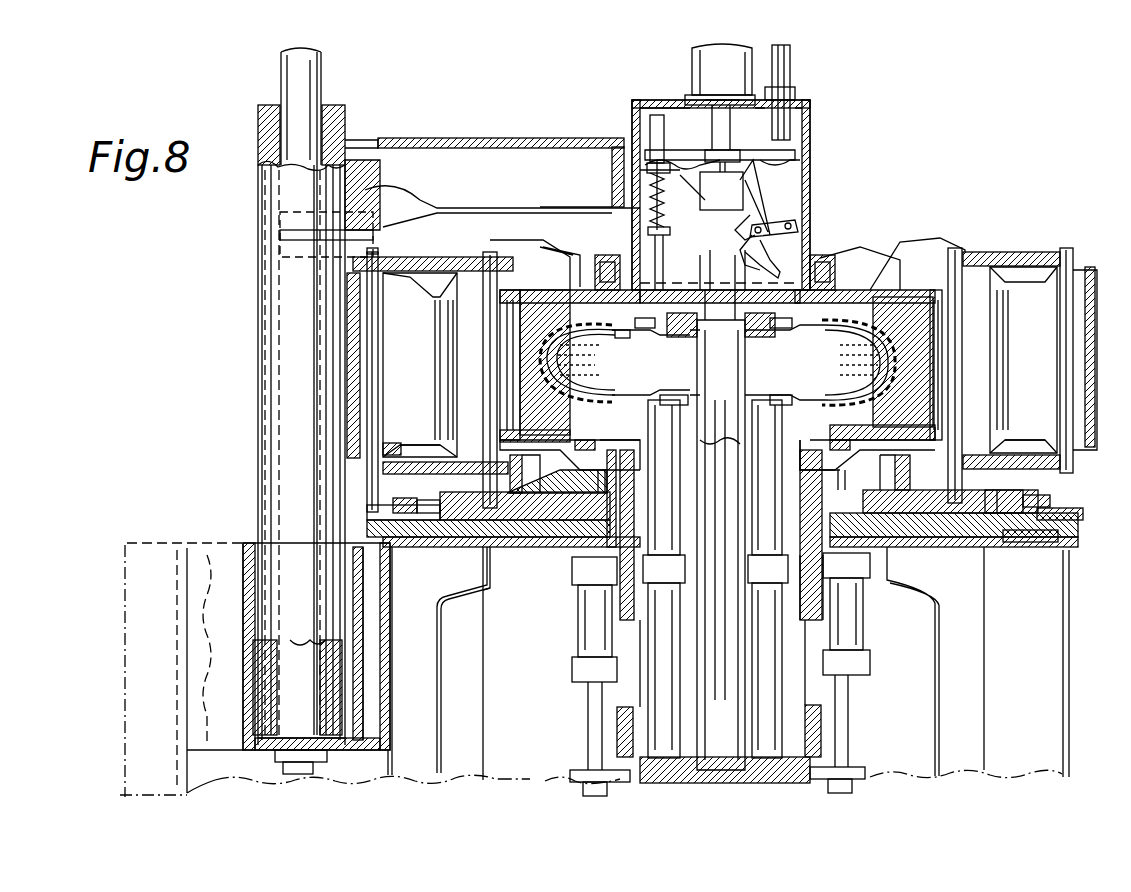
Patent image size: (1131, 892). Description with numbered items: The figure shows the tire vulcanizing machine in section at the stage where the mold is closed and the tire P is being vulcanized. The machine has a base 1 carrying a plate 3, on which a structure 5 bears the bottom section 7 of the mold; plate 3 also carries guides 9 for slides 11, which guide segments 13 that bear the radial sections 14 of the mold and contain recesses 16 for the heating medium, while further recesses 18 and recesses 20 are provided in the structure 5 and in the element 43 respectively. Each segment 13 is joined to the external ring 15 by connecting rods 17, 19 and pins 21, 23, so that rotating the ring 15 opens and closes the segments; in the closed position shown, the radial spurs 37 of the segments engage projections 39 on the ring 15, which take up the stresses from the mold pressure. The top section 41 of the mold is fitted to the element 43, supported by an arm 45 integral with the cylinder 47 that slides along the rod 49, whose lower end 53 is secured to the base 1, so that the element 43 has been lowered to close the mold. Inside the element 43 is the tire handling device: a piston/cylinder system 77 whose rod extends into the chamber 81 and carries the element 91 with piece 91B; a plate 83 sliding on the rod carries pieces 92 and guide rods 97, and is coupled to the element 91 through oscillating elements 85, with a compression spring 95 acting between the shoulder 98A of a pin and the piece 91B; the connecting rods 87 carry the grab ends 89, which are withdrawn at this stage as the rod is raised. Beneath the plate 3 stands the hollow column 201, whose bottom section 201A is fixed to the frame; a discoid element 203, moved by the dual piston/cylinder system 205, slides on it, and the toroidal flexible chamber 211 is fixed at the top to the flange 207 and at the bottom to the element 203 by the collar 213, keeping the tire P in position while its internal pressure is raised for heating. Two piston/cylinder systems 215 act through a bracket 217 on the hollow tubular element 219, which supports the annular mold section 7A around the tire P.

The base 1 is at (225, 560).
The plate 3 is at (460, 538).
The structure 5 is at (595, 482).
The bottom section of the tire vulcanization mold 7 is at (565, 440).
The annular section of the mold 7A is at (805, 395).
The guides 9 is at (442, 498).
The slides 11 is at (505, 598).
The segments 13 is at (923, 240).
The radial sections of the tire vulcanization mold 14 is at (515, 373).
The external ring 15 is at (328, 320).
The recesses 16 is at (508, 418).
The connecting rod 17 is at (430, 277).
The recesses 18 is at (575, 483).
The connecting rod 19 is at (415, 450).
The recesses 20 is at (615, 260).
The pin 21 is at (380, 306).
The pin 23 is at (488, 315).
The radial spurs 37 is at (520, 524).
The projections 39 is at (405, 277).
The top section of the mold 41 is at (550, 260).
The element 43 is at (832, 145).
The arm 45 is at (431, 150).
The cylinder 47 is at (258, 270).
The rod 49 is at (284, 76).
The end of rod 53 is at (280, 750).
The piston/cylinder system 77 is at (690, 64).
The chamber 81 is at (643, 113).
The plate 83 is at (680, 143).
The oscillating element 85 is at (777, 207).
The connecting rod 87 is at (760, 250).
The arm or end section 89 is at (855, 222).
The element 91 is at (733, 204).
The piece 91B is at (705, 173).
The piece 92 is at (785, 175).
The compression spring 95 is at (669, 258).
The rod 97 is at (780, 78).
The shoulder 98A is at (630, 218).
The hollow column 201 is at (735, 432).
The bottom section of hollow column 201A is at (715, 780).
The discoid element 203 is at (745, 372).
The dual piston/cylinder system 205 is at (650, 695).
The flange 207 is at (720, 270).
The flexible chamber 211 is at (578, 400).
The collar 213 is at (663, 377).
The piston/cylinder systems 215 is at (588, 653).
The bracket 217 is at (565, 767).
The hollow tubular element 219 is at (810, 638).
The tire P is at (547, 302).